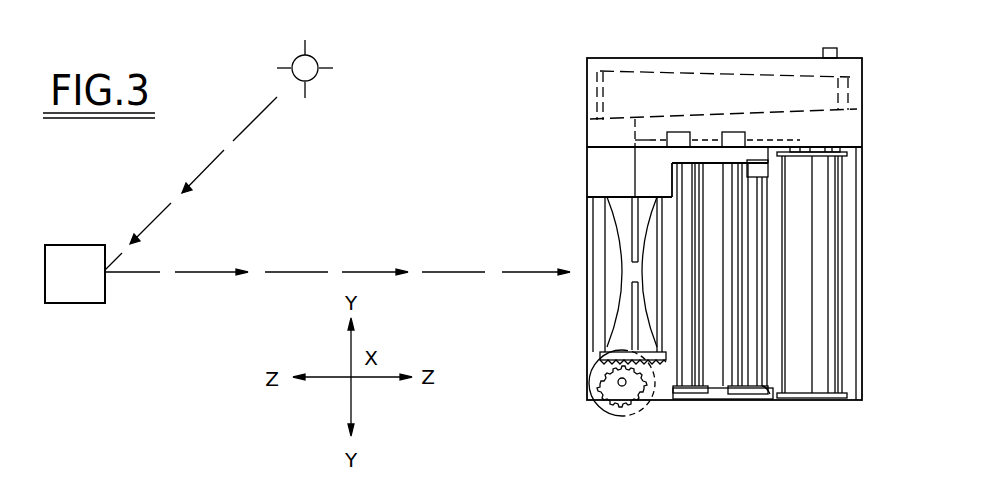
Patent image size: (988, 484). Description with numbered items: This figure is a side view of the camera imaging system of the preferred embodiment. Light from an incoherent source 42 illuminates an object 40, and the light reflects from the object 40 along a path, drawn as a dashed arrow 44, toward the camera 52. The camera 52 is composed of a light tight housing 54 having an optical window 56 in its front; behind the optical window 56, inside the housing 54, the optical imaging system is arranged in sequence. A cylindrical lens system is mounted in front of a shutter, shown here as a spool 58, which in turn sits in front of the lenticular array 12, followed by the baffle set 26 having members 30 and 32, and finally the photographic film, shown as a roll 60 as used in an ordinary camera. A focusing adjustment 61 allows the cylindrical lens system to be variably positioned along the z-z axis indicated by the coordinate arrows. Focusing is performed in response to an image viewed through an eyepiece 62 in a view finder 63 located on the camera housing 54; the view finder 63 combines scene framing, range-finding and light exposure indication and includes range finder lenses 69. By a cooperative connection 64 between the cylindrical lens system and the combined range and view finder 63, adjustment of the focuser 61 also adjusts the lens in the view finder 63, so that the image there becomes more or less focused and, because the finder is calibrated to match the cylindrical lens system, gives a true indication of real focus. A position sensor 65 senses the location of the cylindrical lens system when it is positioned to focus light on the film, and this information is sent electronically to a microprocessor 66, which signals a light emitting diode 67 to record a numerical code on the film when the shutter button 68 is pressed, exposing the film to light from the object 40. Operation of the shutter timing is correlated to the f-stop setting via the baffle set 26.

The lenticular array 12 is at (736, 395).
The baffle set 26 is at (758, 398).
The baffle set member 30 is at (768, 392).
The baffle set member 32 is at (742, 400).
The object 40 is at (83, 303).
The incoherent source 42 is at (316, 58).
The beam 44 is at (355, 272).
The camera 52 is at (568, 138).
The light tight housing 54 is at (587, 377).
The optical window 56 is at (587, 298).
The spool 58 is at (688, 395).
The roll 60 is at (823, 392).
The focusing adjustment 61 is at (608, 412).
The eyepiece 62 is at (862, 99).
The view finder 63 is at (733, 78).
The cooperative connection 64 is at (632, 160).
The position sensor 65 is at (683, 132).
The microprocessor 66 is at (738, 132).
The light emitting diode 67 is at (758, 165).
The shutter button 68 is at (835, 47).
The range finder lenses 69 is at (587, 93).